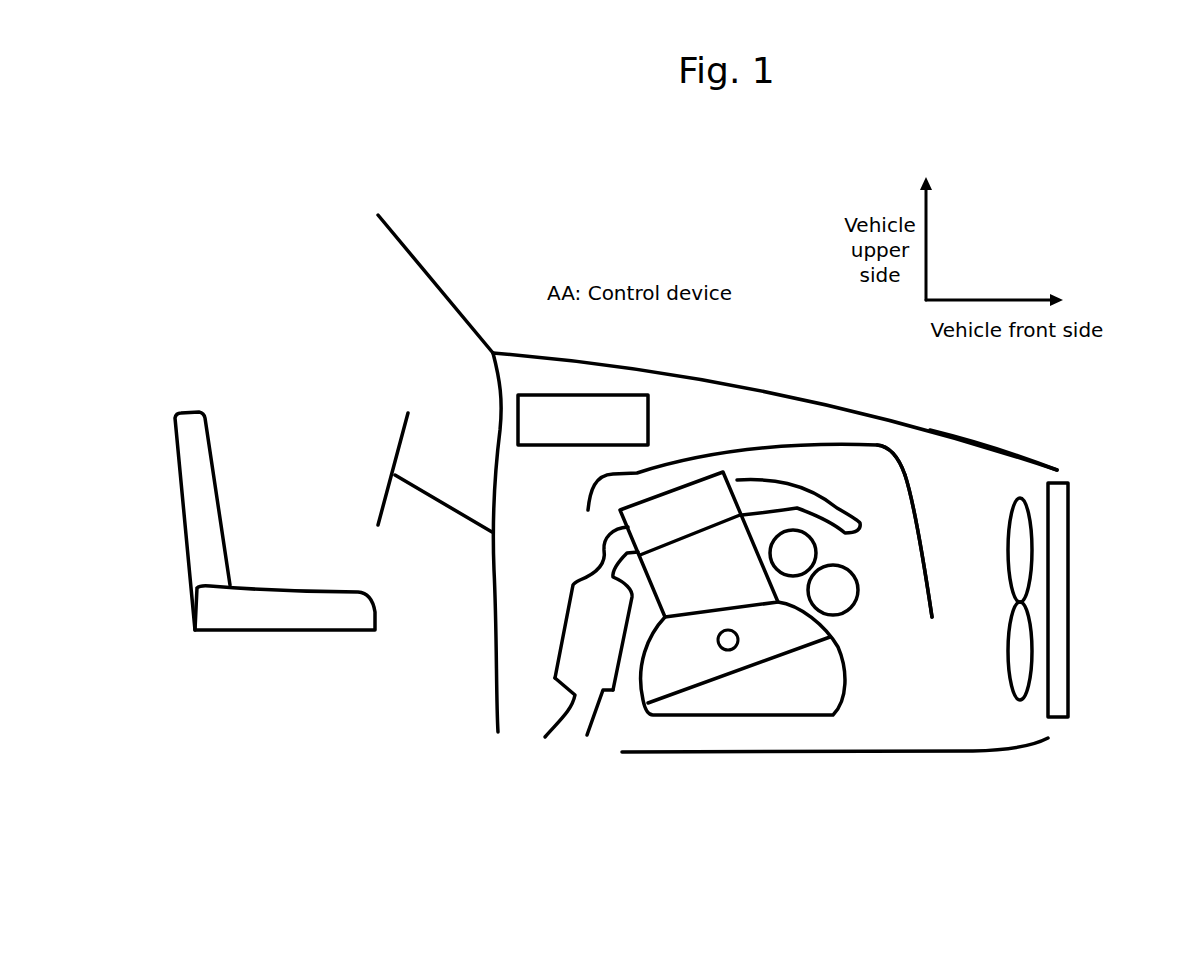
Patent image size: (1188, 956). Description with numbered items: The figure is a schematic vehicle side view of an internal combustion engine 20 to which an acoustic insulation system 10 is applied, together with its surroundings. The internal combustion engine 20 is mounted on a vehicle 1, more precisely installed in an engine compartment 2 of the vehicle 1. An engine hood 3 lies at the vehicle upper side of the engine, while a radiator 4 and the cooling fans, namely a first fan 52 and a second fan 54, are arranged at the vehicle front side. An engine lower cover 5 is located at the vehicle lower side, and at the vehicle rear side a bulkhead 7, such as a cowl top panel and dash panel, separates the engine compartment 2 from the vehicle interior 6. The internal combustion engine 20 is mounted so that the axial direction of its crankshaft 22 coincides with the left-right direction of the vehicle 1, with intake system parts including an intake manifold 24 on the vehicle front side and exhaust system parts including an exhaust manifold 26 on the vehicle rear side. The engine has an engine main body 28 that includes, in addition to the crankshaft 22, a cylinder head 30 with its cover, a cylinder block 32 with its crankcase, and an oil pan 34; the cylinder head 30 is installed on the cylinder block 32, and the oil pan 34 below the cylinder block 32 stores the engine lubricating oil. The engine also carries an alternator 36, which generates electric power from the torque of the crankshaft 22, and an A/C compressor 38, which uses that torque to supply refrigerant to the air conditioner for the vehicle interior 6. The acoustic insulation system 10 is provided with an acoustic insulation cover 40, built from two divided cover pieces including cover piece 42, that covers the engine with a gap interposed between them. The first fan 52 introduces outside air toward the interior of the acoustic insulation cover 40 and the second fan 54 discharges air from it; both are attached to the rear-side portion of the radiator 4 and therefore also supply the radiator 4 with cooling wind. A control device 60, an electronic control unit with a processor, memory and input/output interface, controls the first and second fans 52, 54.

The vehicle 1 is at (760, 320).
The engine compartment 2 is at (948, 432).
The engine hood 3 is at (807, 397).
The radiator 4 is at (1070, 535).
The engine lower cover 5 is at (890, 753).
The vehicle interior 6 is at (398, 340).
The bulkhead 7 is at (492, 667).
The acoustic insulation system 10 is at (780, 430).
The internal combustion engine 20 is at (594, 529).
The crankshaft 22 is at (722, 650).
The intake manifold 24 is at (823, 500).
The exhaust manifold 26 is at (572, 587).
The engine main body 28 is at (744, 472).
The cylinder head 30 is at (672, 515).
The cylinder block 32 is at (663, 678).
The oil pan 34 is at (748, 700).
The alternator 36 is at (820, 553).
The A/C compressor 38 is at (860, 583).
The acoustic insulation cover 40 is at (924, 486).
The cover piece 42 is at (922, 532).
The first fan 52 is at (1063, 656).
The second fan 54 is at (1020, 700).
The control device 60 is at (588, 393).